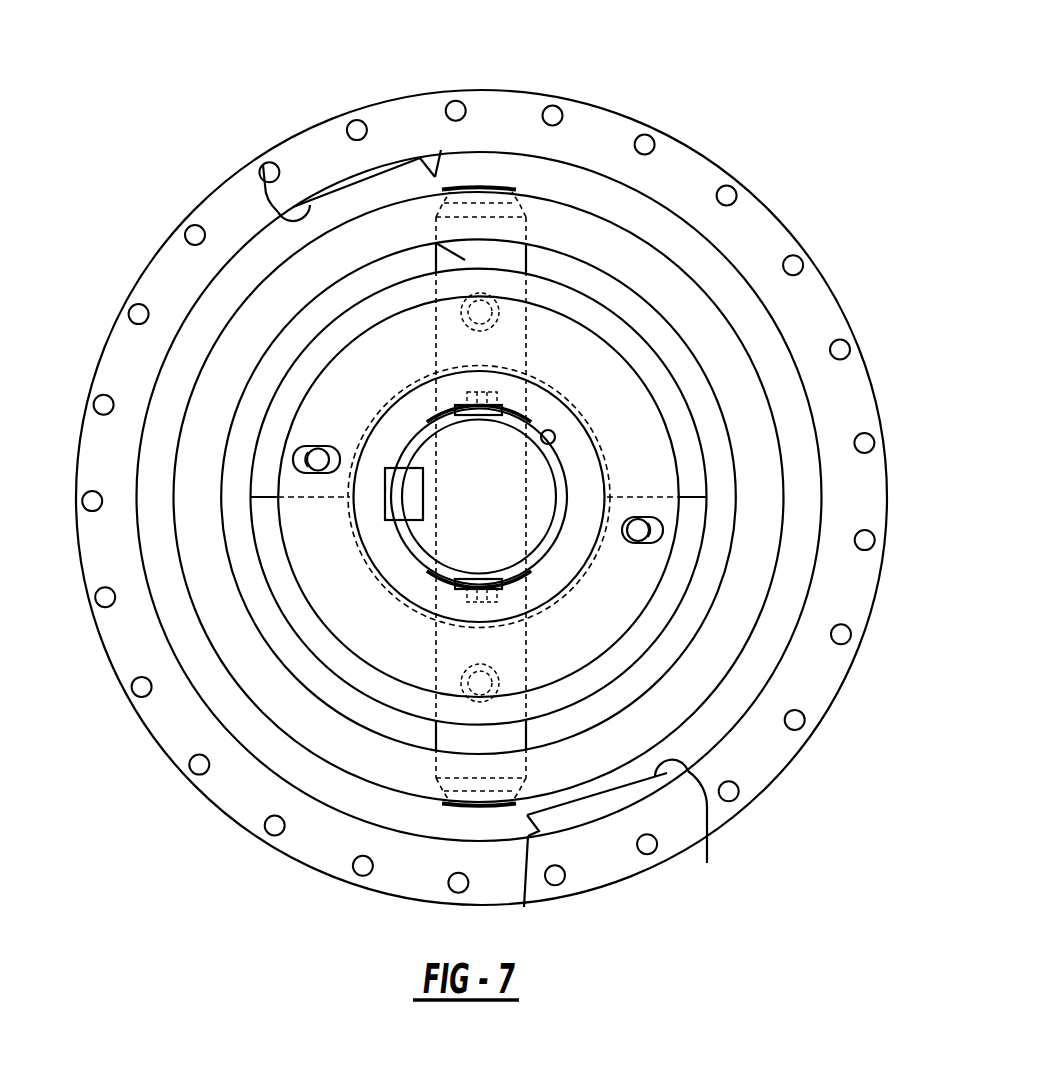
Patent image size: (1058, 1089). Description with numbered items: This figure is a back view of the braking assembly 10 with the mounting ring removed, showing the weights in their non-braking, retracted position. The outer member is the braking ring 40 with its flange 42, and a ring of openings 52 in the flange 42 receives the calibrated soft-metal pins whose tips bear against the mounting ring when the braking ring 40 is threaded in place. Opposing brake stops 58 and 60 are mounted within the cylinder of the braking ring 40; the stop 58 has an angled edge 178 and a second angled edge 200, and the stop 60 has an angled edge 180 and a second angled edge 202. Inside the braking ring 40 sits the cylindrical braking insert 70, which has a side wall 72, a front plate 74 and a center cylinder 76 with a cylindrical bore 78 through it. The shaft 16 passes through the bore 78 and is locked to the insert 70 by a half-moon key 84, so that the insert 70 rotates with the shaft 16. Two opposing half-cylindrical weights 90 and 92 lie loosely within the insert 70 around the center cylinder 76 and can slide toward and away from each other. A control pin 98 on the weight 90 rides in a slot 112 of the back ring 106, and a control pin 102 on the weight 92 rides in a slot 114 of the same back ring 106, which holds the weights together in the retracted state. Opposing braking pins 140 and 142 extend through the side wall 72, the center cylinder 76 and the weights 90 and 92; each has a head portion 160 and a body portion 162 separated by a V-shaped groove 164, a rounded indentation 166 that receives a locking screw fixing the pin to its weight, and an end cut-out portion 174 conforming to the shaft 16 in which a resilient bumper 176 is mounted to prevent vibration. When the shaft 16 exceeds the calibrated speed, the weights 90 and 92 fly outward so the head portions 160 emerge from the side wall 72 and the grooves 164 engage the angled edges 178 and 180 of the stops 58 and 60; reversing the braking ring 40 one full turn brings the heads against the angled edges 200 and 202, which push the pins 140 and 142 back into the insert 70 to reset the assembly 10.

The braking assembly 10 is at (683, 102).
The shaft 16 is at (486, 560).
The braking ring 40 is at (727, 830).
The flange 42 is at (157, 272).
The openings 52 is at (103, 392).
The brake stop 58 is at (388, 180).
The brake stop 60 is at (615, 802).
The braking insert 70 is at (692, 723).
The side wall 72 is at (745, 618).
The front plate 74 is at (245, 558).
The center cylinder 76 is at (553, 573).
The cylindrical bore 78 is at (551, 431).
The half-moon key 84 is at (393, 503).
The weight 90 is at (662, 350).
The weight 92 is at (337, 682).
The control pin 98 is at (319, 448).
The control pin 102 is at (638, 541).
The back ring 106 is at (677, 442).
The slot 112 is at (300, 444).
The slot 114 is at (653, 542).
The braking pin 140 is at (533, 328).
The braking pin 142 is at (445, 750).
The head portion 160 is at (480, 187).
The body portion 162 is at (436, 243).
The V-shaped groove 164 is at (515, 213).
The rounded indentation 166 is at (478, 308).
The cut-out portion 174 is at (445, 417).
The resilient bumper 176 is at (495, 417).
The angled edge 178 is at (441, 150).
The angled edge 180 is at (524, 907).
The angled edge 200 is at (263, 165).
The angled edge 202 is at (707, 863).